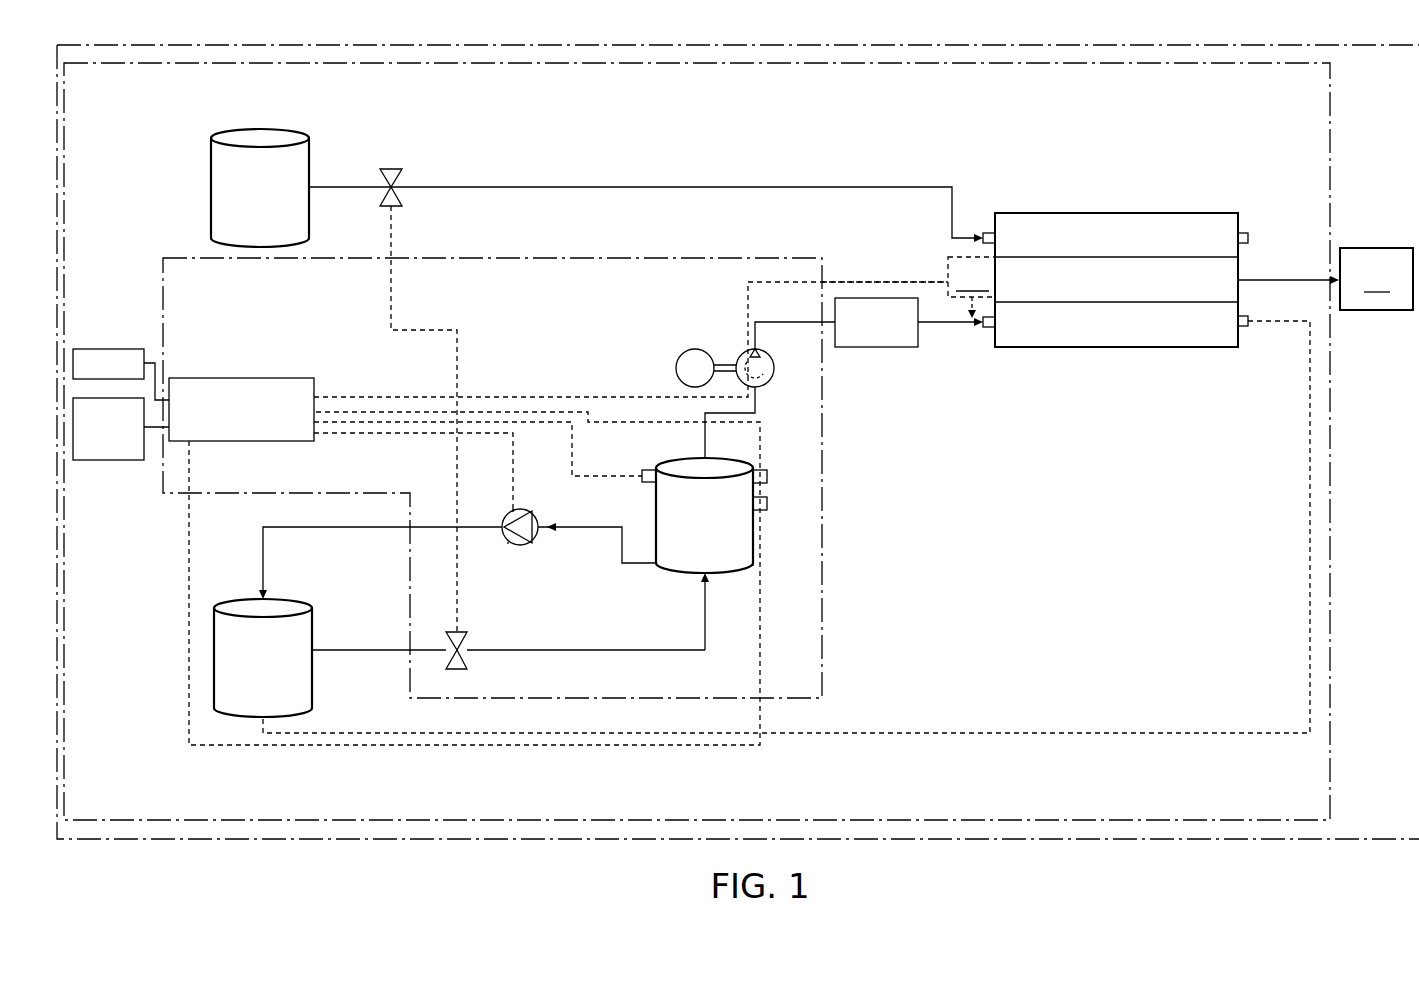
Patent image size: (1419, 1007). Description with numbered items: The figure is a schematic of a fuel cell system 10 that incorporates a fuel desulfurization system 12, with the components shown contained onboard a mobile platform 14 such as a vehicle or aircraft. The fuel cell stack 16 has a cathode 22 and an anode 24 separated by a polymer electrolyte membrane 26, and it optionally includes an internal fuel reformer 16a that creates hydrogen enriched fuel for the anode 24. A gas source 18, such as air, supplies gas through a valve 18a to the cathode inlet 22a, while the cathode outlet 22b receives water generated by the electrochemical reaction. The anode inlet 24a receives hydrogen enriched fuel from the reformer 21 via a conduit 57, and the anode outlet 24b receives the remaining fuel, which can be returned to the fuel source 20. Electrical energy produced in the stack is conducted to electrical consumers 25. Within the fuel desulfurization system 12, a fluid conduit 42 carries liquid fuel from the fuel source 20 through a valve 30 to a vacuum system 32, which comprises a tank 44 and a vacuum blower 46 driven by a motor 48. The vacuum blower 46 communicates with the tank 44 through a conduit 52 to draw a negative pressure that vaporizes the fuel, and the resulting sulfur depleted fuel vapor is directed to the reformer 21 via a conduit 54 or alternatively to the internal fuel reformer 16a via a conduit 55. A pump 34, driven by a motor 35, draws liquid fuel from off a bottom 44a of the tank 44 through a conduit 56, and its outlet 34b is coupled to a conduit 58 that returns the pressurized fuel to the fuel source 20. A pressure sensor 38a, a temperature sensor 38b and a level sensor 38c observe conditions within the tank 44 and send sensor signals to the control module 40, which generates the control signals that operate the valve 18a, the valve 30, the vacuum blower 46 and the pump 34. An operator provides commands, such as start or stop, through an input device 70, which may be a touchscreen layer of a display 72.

The fuel cell system 10 is at (1164, 60).
The fuel desulfurization system 12 is at (832, 625).
The mobile platform 14 is at (1418, 108).
The fuel cell stack 16 is at (1204, 144).
The internal fuel reformer 16a is at (971, 287).
The gas source 18 is at (262, 128).
The valve 18a is at (393, 168).
The fuel source 20 is at (313, 620).
The reformer 21 is at (878, 347).
The cathode 22 is at (1044, 202).
The cathode inlet 22a is at (985, 232).
The cathode outlet 22b is at (1245, 232).
The anode 24 is at (1063, 372).
The anode inlet 24a is at (990, 328).
The anode outlet 24b is at (1245, 327).
The electrical consumers 25 is at (1376, 279).
The polymer electrolyte membrane 26 is at (1216, 268).
The valve 30 is at (466, 658).
The vacuum system 32 is at (874, 464).
The pump 34 is at (555, 518).
The outlet 34b is at (510, 541).
The motor 35 is at (512, 514).
The pressure sensor 38a is at (767, 474).
The temperature sensor 38b is at (641, 470).
The level sensor 38c is at (767, 504).
The control module 40 is at (247, 377).
The fluid conduit 42 is at (588, 646).
The tank 44 is at (767, 561).
The bottom 44a is at (733, 578).
The vacuum blower 46 is at (676, 345).
The motor 48 is at (745, 355).
The conduit 52 is at (760, 403).
The conduit 54 is at (785, 325).
The conduit 55 is at (884, 280).
The conduit 56 is at (573, 530).
The conduit 57 is at (952, 324).
The conduit 58 is at (335, 528).
The input device 70 is at (105, 460).
The display 72 is at (105, 348).